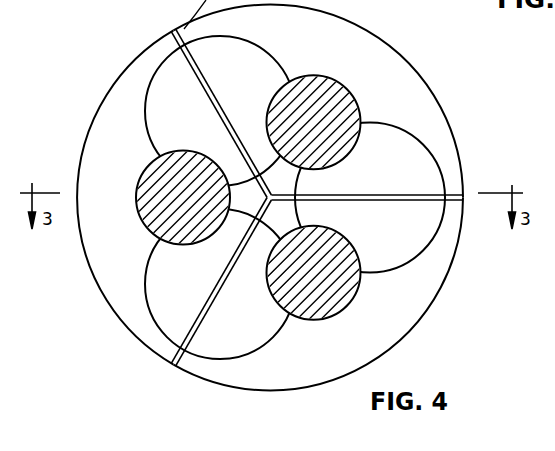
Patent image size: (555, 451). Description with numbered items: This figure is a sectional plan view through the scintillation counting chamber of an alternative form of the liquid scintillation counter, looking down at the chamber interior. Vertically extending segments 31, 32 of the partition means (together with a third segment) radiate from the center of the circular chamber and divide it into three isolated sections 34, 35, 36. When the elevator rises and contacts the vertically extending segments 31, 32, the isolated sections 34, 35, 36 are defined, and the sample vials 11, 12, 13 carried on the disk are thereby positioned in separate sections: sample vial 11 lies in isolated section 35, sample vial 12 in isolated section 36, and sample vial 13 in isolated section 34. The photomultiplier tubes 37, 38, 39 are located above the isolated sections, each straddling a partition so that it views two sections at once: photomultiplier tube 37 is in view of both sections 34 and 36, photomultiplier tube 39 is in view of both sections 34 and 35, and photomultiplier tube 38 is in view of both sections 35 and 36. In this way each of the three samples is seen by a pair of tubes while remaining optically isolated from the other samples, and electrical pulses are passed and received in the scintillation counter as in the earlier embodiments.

The sample vial 11 is at (150, 231).
The sample vial 12 is at (355, 296).
The sample vial 13 is at (350, 90).
The vertically extending segment 31 is at (183, 372).
The vertically extending segment 32 is at (448, 194).
The isolated section 34 is at (352, 58).
The isolated section 35 is at (117, 174).
The isolated section 36 is at (327, 360).
The photomultiplier tube 37 is at (389, 182).
The photomultiplier tube 38 is at (202, 286).
The photomultiplier tube 39 is at (195, 120).